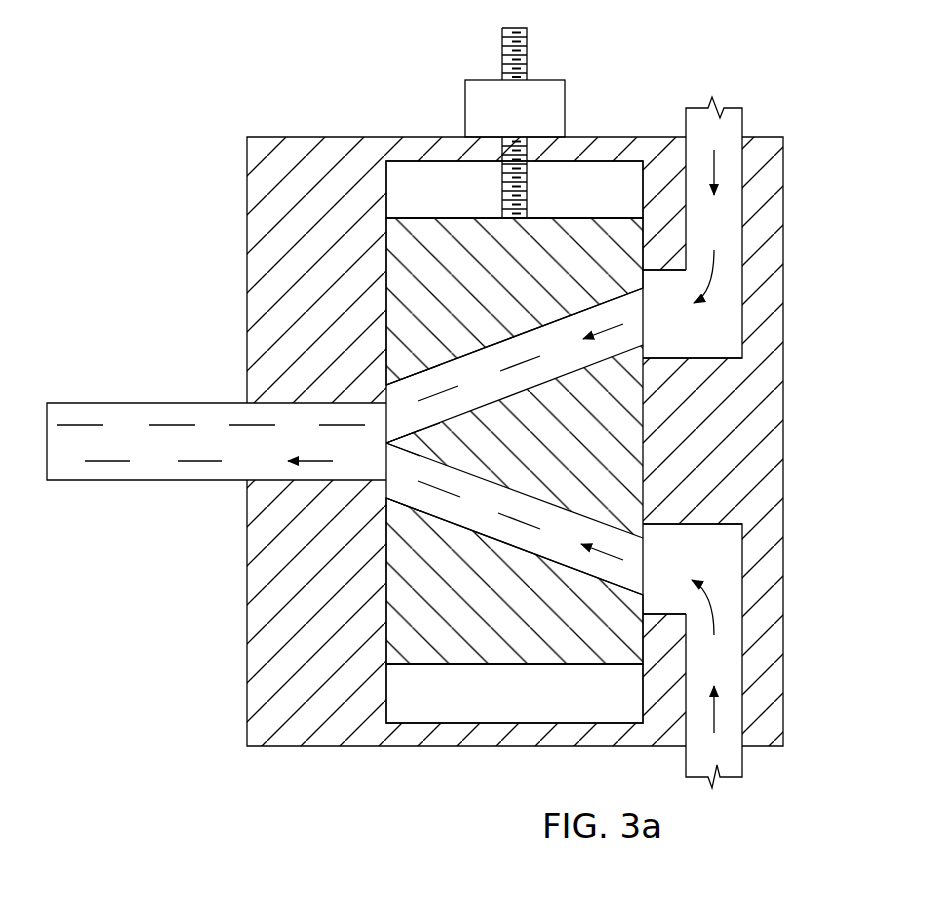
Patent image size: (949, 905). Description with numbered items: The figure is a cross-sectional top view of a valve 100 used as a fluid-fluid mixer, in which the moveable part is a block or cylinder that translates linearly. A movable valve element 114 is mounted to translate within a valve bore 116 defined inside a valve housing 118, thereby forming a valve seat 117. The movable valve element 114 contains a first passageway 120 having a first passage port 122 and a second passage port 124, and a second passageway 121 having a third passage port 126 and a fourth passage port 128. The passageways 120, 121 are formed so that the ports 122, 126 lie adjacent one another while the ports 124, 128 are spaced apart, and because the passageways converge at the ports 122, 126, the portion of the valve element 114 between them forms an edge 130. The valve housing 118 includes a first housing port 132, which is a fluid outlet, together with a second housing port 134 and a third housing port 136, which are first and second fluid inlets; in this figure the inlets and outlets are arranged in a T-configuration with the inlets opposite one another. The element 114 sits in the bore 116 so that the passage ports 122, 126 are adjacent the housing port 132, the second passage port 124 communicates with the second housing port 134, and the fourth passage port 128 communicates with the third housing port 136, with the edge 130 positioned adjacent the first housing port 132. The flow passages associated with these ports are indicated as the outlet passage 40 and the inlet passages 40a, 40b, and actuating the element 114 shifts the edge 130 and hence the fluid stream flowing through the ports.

The valve 100 is at (846, 70).
The outlet passage 40 is at (127, 402).
The first inlet passage 40a is at (732, 173).
The second inlet passage 40b is at (730, 668).
The movable valve element 114 is at (386, 265).
The valve bore 116 is at (387, 183).
The valve seat 117 is at (502, 718).
The valve housing 118 is at (247, 663).
The first passageway 120 is at (478, 372).
The second passageway 121 is at (477, 510).
The first passage port 122 is at (378, 418).
The second passage port 124 is at (630, 330).
The third passage port 126 is at (393, 470).
The fourth passage port 128 is at (630, 585).
The edge 130 is at (387, 442).
The first housing port 132 is at (397, 413).
The second housing port 134 is at (651, 300).
The third housing port 136 is at (652, 560).